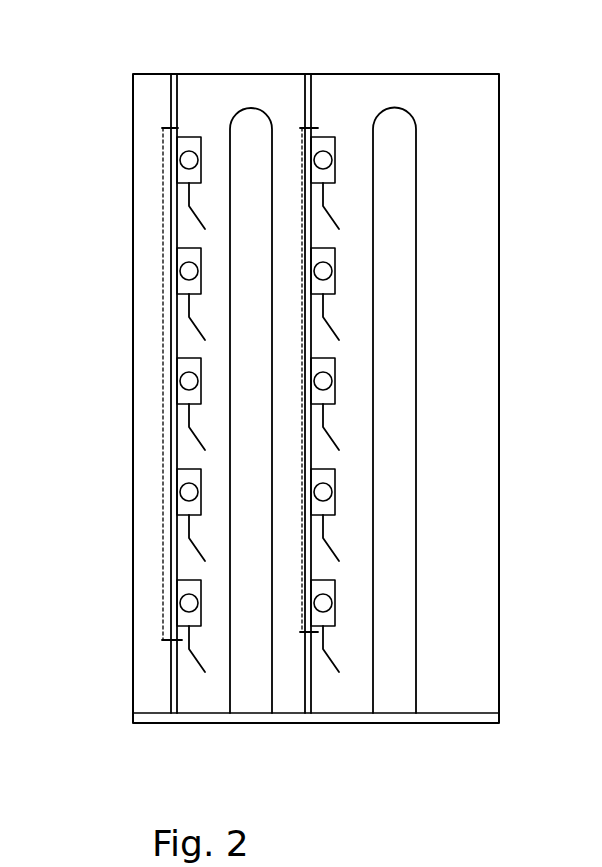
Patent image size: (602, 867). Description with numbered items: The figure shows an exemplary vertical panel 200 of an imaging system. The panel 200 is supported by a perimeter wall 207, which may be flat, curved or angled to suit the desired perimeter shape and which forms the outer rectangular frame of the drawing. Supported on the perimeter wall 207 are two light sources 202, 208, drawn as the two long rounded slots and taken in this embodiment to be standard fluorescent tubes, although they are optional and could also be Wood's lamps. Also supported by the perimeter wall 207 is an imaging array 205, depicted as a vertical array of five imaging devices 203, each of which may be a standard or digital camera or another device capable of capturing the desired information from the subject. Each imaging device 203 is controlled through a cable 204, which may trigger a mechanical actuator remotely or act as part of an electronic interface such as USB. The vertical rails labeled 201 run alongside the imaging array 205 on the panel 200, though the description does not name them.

The panel 200 is at (91, 73).
The guide rail 201 is at (180, 90).
The light source 202 is at (250, 122).
The imaging device 203 is at (180, 137).
The cable 204 is at (333, 208).
The imaging array 205 is at (232, 384).
The perimeter wall 207 is at (313, 87).
The light source 208 is at (397, 125).